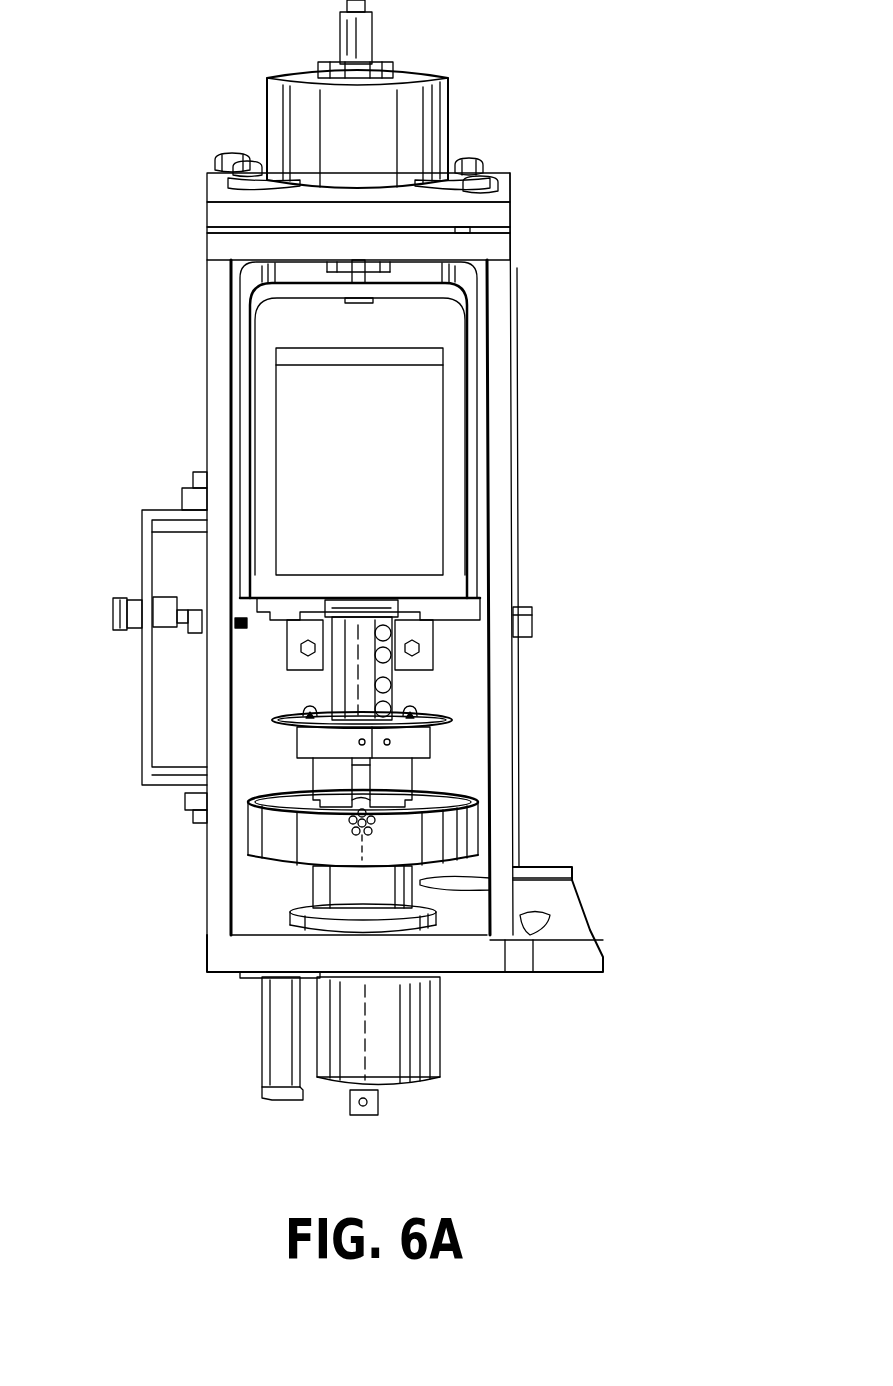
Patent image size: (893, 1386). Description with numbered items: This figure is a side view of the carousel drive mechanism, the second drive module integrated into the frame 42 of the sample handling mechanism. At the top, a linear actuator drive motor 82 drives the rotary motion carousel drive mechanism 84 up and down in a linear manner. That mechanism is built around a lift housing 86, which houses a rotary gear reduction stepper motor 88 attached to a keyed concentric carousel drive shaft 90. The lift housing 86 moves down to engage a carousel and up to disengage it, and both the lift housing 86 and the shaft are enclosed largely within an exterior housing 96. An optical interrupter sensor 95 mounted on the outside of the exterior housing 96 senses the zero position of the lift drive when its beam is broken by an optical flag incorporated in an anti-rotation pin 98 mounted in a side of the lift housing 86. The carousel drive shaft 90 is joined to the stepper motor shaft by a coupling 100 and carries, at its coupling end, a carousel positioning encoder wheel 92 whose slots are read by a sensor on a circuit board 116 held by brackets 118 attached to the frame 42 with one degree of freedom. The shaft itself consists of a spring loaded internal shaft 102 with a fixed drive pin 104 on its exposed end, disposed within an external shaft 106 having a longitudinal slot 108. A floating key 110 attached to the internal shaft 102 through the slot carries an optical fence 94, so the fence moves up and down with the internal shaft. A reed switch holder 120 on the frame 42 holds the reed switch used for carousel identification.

The frame 42 is at (233, 947).
The linear actuator drive motor 82 is at (410, 130).
The rotary motion carousel drive mechanism 84 is at (465, 447).
The lift housing 86 is at (465, 342).
The rotary gear reduction stepper motor 88 is at (400, 557).
The carousel drive shaft 90 is at (422, 1092).
The carousel positioning encoder wheel 92 is at (440, 728).
The optical fence 94 is at (455, 836).
The optical interrupter sensor 95 is at (118, 617).
The exterior housing 96 is at (230, 393).
The anti-rotation pin 98 is at (235, 627).
The coupling 100 is at (398, 663).
The internal shaft 102 is at (378, 1105).
The fixed drive pin 104 is at (363, 1118).
The external shaft 106 is at (328, 783).
The longitudinal slot 108 is at (360, 772).
The floating key 110 is at (348, 830).
The circuit board 116 is at (405, 700).
The brackets 118 is at (420, 680).
The reed switch holder 120 is at (278, 1058).